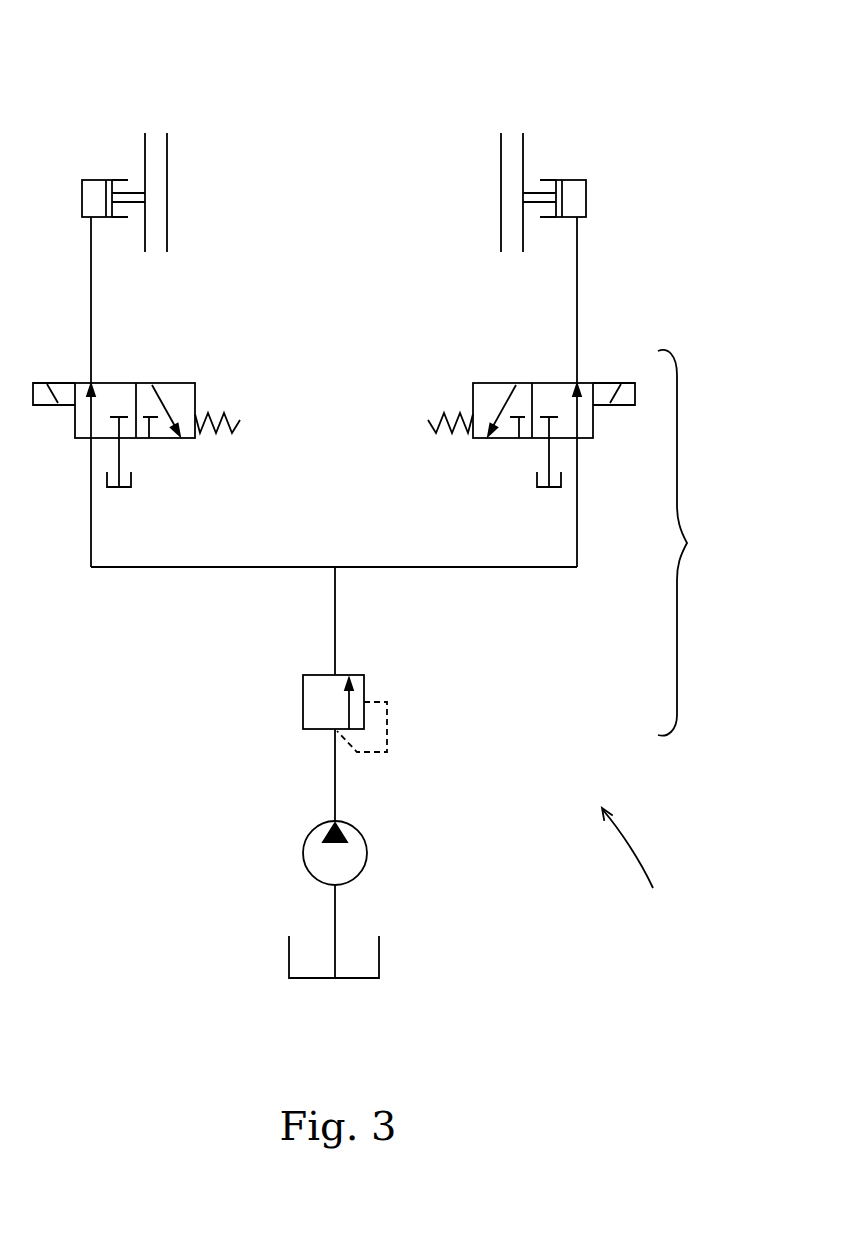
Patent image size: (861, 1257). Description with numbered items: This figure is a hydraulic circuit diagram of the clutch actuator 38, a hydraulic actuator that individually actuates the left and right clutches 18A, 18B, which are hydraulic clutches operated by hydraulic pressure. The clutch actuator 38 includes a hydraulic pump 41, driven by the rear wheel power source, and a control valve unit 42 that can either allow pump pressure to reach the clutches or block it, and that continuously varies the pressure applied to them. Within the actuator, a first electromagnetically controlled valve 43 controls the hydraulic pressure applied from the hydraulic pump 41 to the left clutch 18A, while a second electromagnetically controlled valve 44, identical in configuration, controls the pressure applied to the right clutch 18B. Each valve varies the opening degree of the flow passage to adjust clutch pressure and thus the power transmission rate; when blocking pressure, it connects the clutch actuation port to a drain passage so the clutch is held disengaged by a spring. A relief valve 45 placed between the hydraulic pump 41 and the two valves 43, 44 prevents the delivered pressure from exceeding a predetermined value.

The left clutch 18A is at (157, 130).
The right clutch 18B is at (511, 130).
The clutch actuator 38 is at (639, 871).
The hydraulic pump 41 is at (367, 851).
The control valve unit 42 is at (688, 543).
The first electromagnetically controlled valve 43 is at (172, 380).
The second electromagnetically controlled valve 44 is at (496, 380).
The relief valve 45 is at (303, 702).